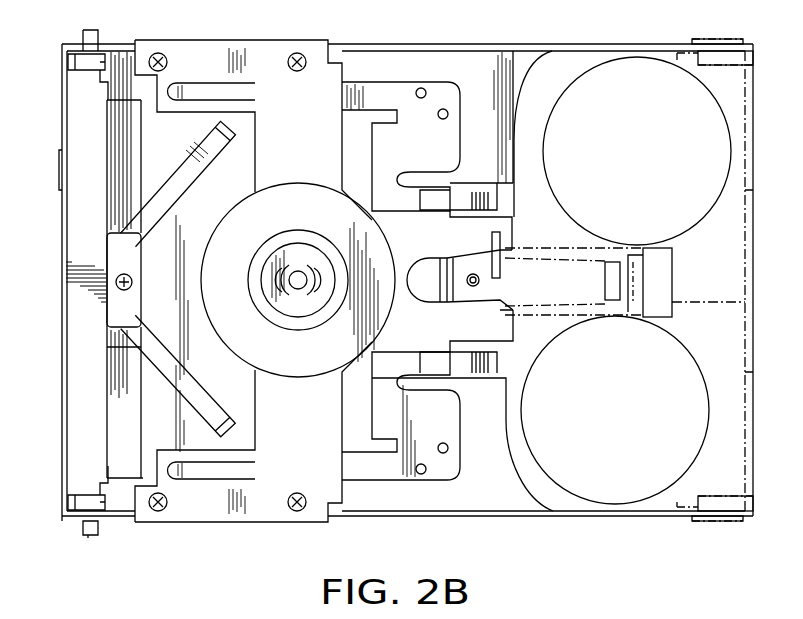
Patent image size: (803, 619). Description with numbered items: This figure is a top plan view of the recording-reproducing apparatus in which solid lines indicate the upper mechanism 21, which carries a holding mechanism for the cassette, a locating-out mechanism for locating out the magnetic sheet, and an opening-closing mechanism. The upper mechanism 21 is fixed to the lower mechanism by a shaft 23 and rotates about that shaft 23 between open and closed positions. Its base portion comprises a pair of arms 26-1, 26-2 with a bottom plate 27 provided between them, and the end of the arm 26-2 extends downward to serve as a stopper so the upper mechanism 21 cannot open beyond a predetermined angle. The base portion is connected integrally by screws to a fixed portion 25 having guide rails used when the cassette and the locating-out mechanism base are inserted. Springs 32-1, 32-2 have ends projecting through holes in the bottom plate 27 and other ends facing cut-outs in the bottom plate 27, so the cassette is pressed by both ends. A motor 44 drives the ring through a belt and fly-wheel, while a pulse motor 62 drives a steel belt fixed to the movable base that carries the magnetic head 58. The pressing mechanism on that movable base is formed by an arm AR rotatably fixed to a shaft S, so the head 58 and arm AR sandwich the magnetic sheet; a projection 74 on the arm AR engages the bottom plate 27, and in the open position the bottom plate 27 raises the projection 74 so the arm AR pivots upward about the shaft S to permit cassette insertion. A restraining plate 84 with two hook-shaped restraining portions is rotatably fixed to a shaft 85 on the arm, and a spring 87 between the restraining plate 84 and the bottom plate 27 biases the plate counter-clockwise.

The upper mechanism 21 is at (321, 543).
The shaft 23 is at (732, 39).
The fixed portion 25 is at (262, 44).
The arm 26-1 is at (463, 516).
The arm 26-2 is at (487, 44).
The bottom plate 27 is at (135, 178).
The spring 32-1 is at (383, 470).
The spring 32-2 is at (383, 92).
The motor 44 is at (712, 203).
The magnetic head 58 is at (467, 298).
The pulse motor 62 is at (700, 443).
The projection 74 is at (492, 248).
The restraining plate 84 is at (73, 128).
The shaft 85 is at (92, 535).
The spring 87 is at (200, 166).
The arm AR is at (540, 256).
The shaft S is at (628, 276).